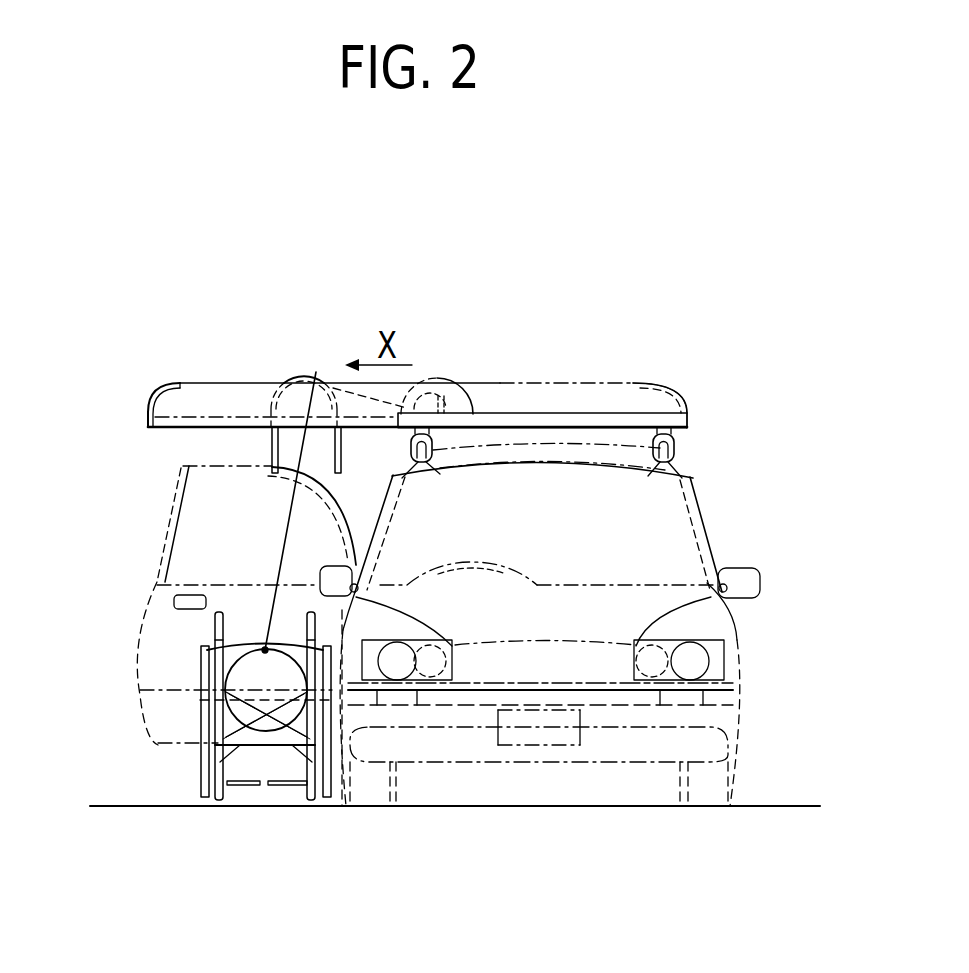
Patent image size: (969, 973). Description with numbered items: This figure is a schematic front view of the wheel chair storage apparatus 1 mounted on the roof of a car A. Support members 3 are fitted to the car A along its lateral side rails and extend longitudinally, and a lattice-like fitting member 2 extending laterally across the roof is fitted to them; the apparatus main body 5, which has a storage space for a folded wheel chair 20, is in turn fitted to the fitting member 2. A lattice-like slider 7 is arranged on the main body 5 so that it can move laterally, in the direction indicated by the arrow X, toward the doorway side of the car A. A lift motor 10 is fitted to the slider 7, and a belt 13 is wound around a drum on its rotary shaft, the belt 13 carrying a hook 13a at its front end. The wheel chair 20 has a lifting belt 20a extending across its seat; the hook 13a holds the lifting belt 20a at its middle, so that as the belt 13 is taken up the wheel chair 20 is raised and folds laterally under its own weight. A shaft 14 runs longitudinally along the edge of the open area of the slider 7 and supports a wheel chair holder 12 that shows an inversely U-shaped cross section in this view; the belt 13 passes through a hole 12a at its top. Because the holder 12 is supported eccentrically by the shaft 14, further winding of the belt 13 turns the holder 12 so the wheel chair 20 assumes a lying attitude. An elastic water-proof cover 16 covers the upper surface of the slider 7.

The wheel chair storage apparatus 1 is at (762, 403).
The fitting member 2 is at (614, 425).
The support member 3 is at (673, 445).
The apparatus main body 5 is at (570, 408).
The slider 7 is at (134, 411).
The lift motor 10 is at (432, 402).
The wheel chair holder 12 is at (343, 432).
The hole 12a is at (316, 372).
The belt 13 is at (262, 547).
The hook 13a is at (264, 648).
The shaft 14 is at (322, 490).
The water-proof cover 16 is at (202, 383).
The wheel chair 20 is at (248, 790).
The lifting belt 20a is at (203, 646).
The car A is at (710, 550).